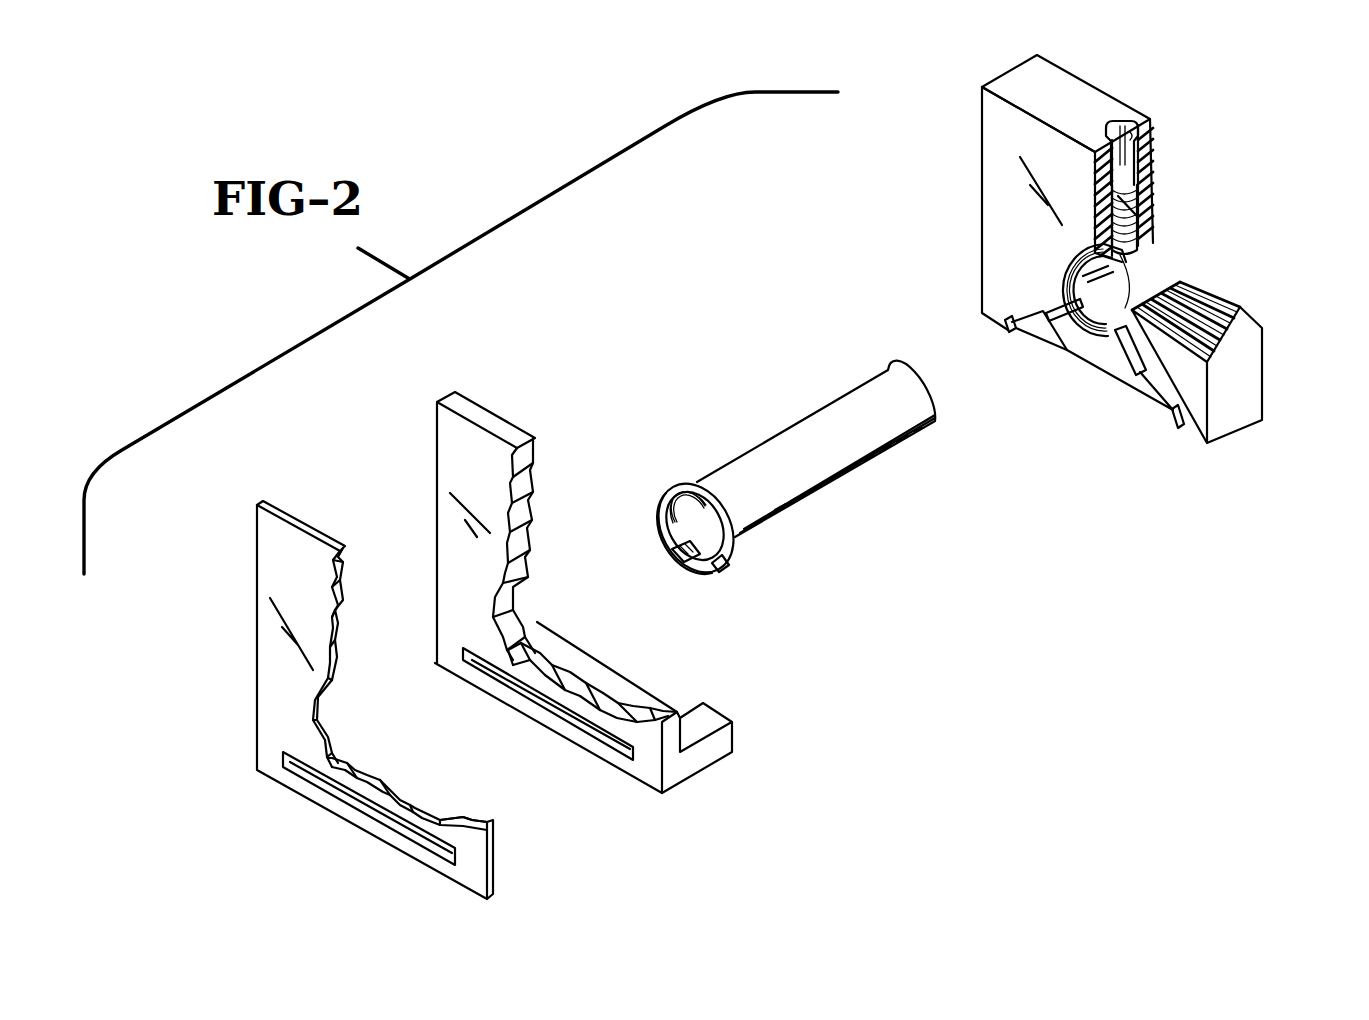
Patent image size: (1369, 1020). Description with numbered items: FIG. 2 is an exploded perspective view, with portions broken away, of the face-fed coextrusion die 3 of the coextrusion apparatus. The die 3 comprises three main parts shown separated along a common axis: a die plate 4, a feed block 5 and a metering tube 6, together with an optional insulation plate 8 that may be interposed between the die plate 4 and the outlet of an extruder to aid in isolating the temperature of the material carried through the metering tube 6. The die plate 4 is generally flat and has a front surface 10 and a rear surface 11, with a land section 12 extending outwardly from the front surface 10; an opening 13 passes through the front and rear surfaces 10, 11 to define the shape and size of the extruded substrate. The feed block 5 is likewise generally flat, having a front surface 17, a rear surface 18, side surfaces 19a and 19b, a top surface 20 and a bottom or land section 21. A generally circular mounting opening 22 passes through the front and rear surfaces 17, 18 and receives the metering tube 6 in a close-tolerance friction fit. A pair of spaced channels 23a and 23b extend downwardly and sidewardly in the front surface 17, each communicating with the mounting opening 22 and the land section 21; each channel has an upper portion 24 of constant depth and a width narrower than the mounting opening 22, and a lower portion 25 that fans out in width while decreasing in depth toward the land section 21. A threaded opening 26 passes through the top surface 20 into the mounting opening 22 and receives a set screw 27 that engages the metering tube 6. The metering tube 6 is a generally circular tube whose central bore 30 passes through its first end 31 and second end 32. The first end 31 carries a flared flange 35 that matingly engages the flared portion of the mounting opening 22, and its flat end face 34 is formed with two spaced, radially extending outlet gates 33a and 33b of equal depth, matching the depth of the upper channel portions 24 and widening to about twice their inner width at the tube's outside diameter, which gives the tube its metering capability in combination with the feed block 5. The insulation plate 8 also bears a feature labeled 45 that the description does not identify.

The face-fed coextrusion die 3 is at (674, 277).
The die plate 4 is at (491, 392).
The feed block 5 is at (1103, 76).
The metering tube 6 is at (760, 432).
The insulation plate 8 is at (466, 700).
The front surface 10 is at (535, 478).
The rear surface 11 is at (458, 470).
The land section 12 is at (567, 653).
The opening 13 is at (577, 720).
The front surface 17 is at (998, 210).
The rear surface 18 is at (1150, 180).
The side surface 19a is at (982, 156).
The side surface 19b is at (1238, 345).
The top surface 20 is at (1030, 92).
The bottom or land section 21 is at (1070, 355).
The mounting opening 22 is at (1135, 305).
The channel 23a is at (1038, 310).
The channel 23b is at (1131, 383).
The upper channel portion 24 is at (1060, 303).
The lower channel portion 25 is at (1010, 323).
The opening 26 is at (1132, 142).
The set screw 27 is at (1142, 236).
The central bore 30 is at (674, 522).
The first end 31 is at (748, 533).
The second end 32 is at (895, 385).
The outlet gate 33a is at (678, 544).
The outlet gate 33b is at (718, 568).
The flat end face 34 is at (668, 500).
The flared flange 35 is at (676, 490).
The slot 45 is at (333, 794).